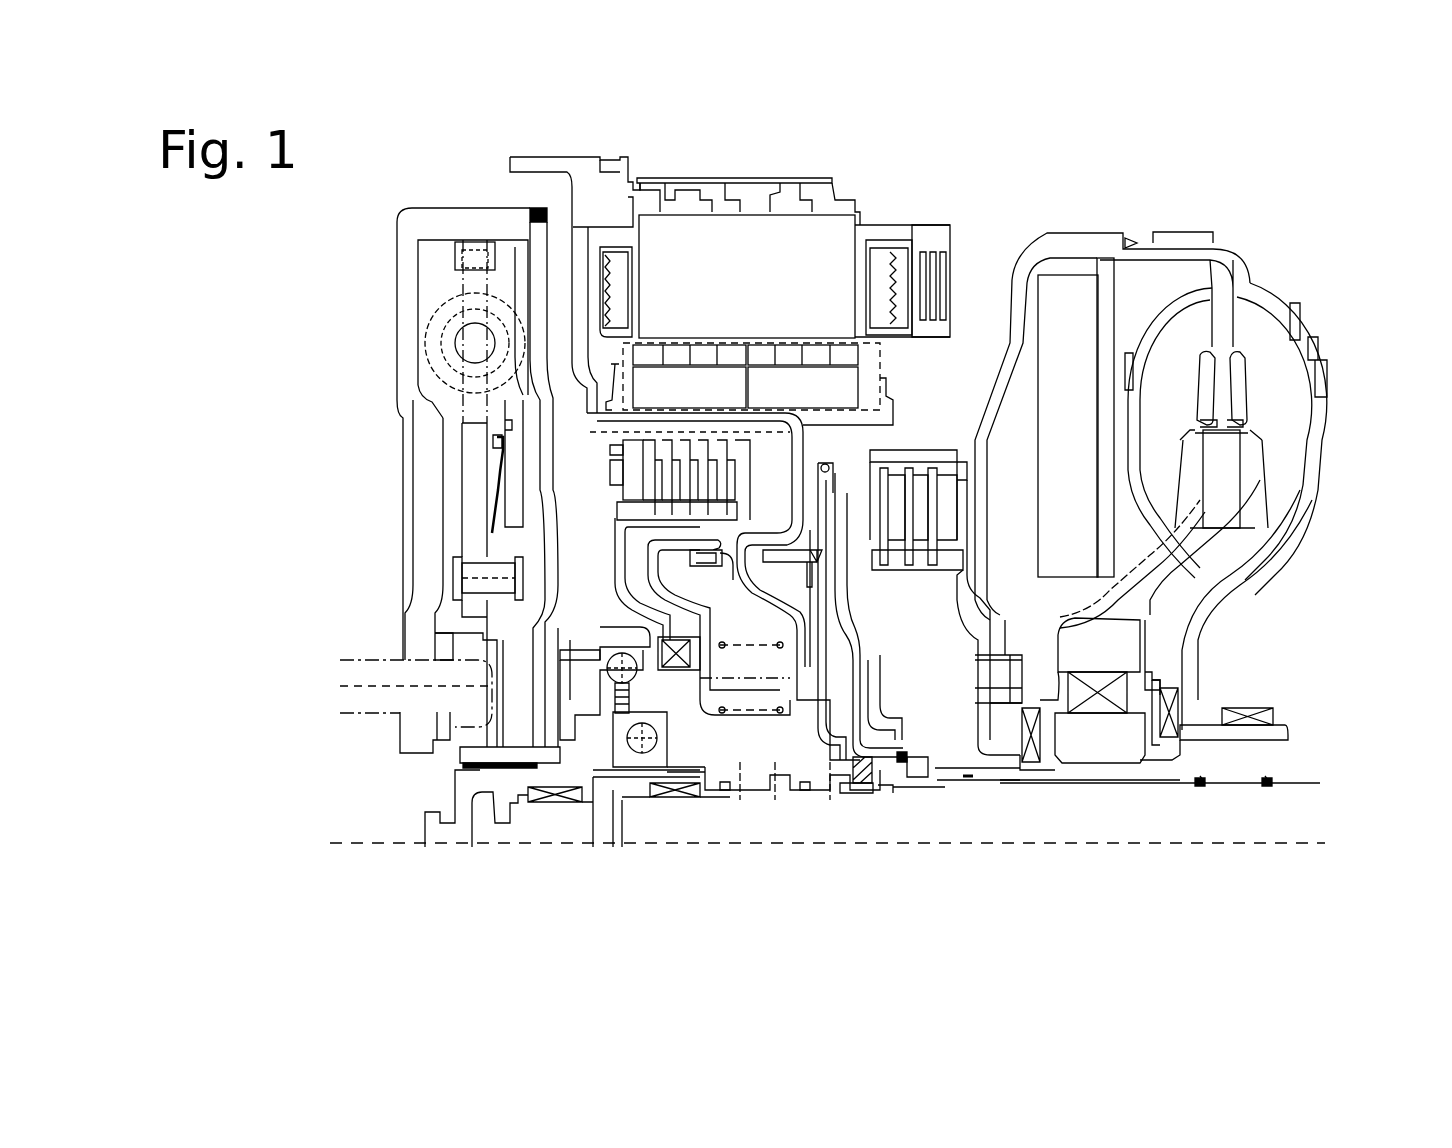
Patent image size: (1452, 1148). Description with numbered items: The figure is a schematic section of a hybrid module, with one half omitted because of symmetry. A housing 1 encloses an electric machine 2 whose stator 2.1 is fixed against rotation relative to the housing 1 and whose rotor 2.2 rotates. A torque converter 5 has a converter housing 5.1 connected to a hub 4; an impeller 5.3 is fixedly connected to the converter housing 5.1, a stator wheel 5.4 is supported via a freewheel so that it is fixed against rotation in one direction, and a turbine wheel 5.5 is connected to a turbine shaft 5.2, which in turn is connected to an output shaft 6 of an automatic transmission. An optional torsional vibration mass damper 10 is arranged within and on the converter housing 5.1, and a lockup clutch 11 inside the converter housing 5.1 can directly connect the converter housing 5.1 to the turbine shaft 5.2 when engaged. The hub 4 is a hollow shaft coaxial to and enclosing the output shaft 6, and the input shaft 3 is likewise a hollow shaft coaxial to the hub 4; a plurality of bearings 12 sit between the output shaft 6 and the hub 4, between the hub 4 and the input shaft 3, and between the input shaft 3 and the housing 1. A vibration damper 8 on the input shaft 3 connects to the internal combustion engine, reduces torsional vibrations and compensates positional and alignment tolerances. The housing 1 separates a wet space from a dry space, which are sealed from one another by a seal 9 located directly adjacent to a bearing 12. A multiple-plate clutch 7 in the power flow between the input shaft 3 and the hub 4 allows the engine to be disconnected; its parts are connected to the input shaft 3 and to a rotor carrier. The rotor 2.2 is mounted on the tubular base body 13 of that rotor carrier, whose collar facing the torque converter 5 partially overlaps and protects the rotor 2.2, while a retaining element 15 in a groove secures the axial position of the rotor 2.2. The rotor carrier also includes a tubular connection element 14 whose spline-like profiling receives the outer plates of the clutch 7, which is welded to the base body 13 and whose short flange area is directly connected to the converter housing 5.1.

The housing 1 is at (590, 255).
The electric machine 2 is at (878, 226).
The stator 2.1 is at (683, 268).
The rotor 2.2 is at (707, 385).
The input shaft 3 is at (478, 778).
The hub 4 is at (818, 770).
The torque converter 5 is at (1268, 258).
The converter housing 5.1 is at (1020, 285).
The turbine shaft 5.2 is at (1003, 725).
The impeller 5.3 is at (1270, 395).
The stator wheel 5.4 is at (1230, 482).
The turbine wheel 5.5 is at (1178, 360).
The output shaft 6 is at (1068, 825).
The clutch 7 is at (612, 493).
The vibration damper 8 is at (405, 287).
The seal 9 is at (578, 654).
The torsional vibration mass damper 10 is at (1062, 310).
The lockup clutch 11 is at (921, 588).
The bearings 12 is at (657, 800).
The base body 13 is at (600, 398).
The connection element 14 is at (770, 435).
The retaining element 15 is at (600, 345).